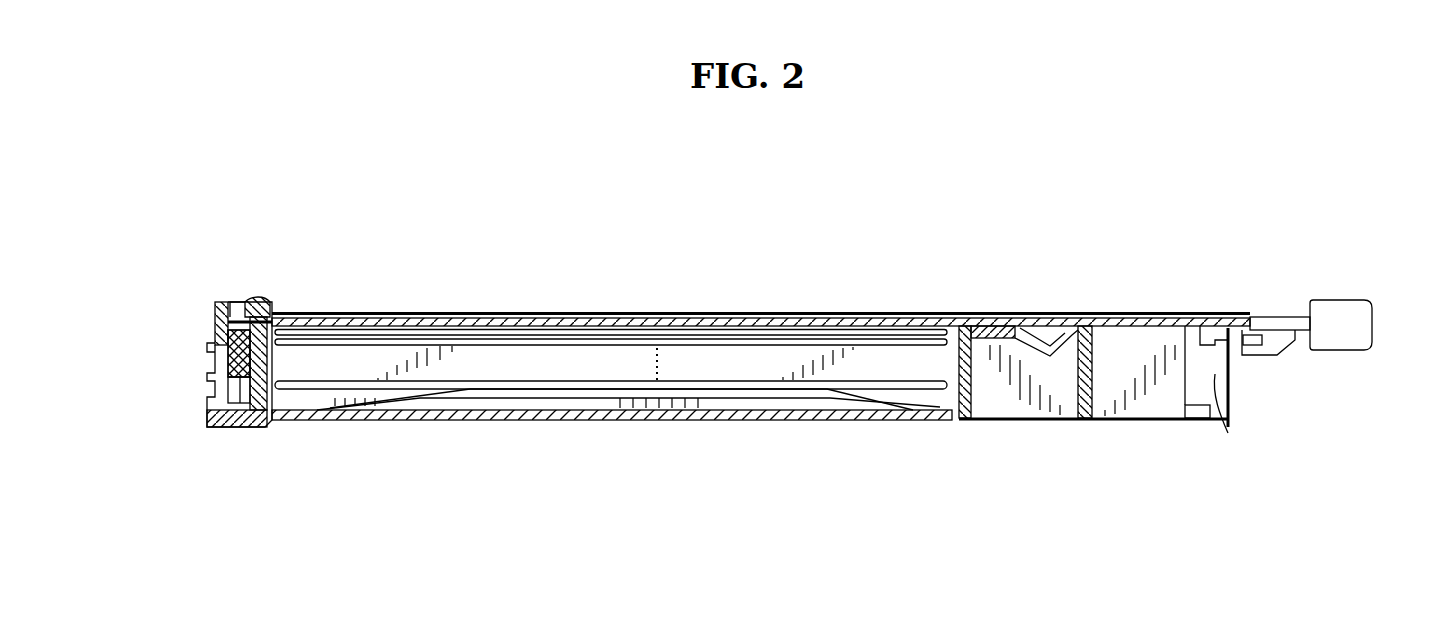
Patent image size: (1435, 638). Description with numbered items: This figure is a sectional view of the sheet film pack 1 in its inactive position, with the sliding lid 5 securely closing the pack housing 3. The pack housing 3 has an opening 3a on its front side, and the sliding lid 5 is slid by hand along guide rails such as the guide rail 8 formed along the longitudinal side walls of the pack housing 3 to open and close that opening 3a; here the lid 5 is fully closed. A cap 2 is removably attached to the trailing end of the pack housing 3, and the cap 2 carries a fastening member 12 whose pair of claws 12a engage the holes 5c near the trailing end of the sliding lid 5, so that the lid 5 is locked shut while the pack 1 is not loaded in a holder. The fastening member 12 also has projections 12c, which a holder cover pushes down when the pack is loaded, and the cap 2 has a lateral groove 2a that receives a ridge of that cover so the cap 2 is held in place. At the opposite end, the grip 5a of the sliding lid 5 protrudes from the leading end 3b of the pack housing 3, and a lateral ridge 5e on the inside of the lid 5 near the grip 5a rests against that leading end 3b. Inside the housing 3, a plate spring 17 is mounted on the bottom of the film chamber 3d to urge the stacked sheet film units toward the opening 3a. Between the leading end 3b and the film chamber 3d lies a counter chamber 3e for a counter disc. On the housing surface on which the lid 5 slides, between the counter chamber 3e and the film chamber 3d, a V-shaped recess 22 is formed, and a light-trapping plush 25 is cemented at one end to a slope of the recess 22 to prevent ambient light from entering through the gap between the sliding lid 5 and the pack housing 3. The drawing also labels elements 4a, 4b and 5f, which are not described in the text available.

The sheet film pack 1 is at (915, 256).
The cap 2 is at (222, 302).
The lateral groove 2a is at (242, 302).
The pack housing 3 is at (665, 421).
The opening 3a is at (718, 303).
The end of pack housing 3b is at (1230, 326).
The film chamber 3d is at (957, 400).
The counter chamber 3e is at (1143, 420).
The upper guide rod 4a is at (530, 318).
The lower guide rod 4b is at (605, 318).
The sliding lid 5 is at (1285, 302).
The grip 5a is at (1375, 325).
The hole 5c is at (268, 300).
The lateral ridge 5e is at (1278, 355).
The engagement portion 5f is at (1215, 352).
The guide rail 8 is at (850, 312).
The fastening member 12 is at (238, 428).
The claw 12a is at (263, 353).
The projection 12c is at (210, 349).
The plate spring 17 is at (565, 399).
The V-shaped recess 22 is at (1048, 332).
The light-trapping plush 25 is at (1005, 328).